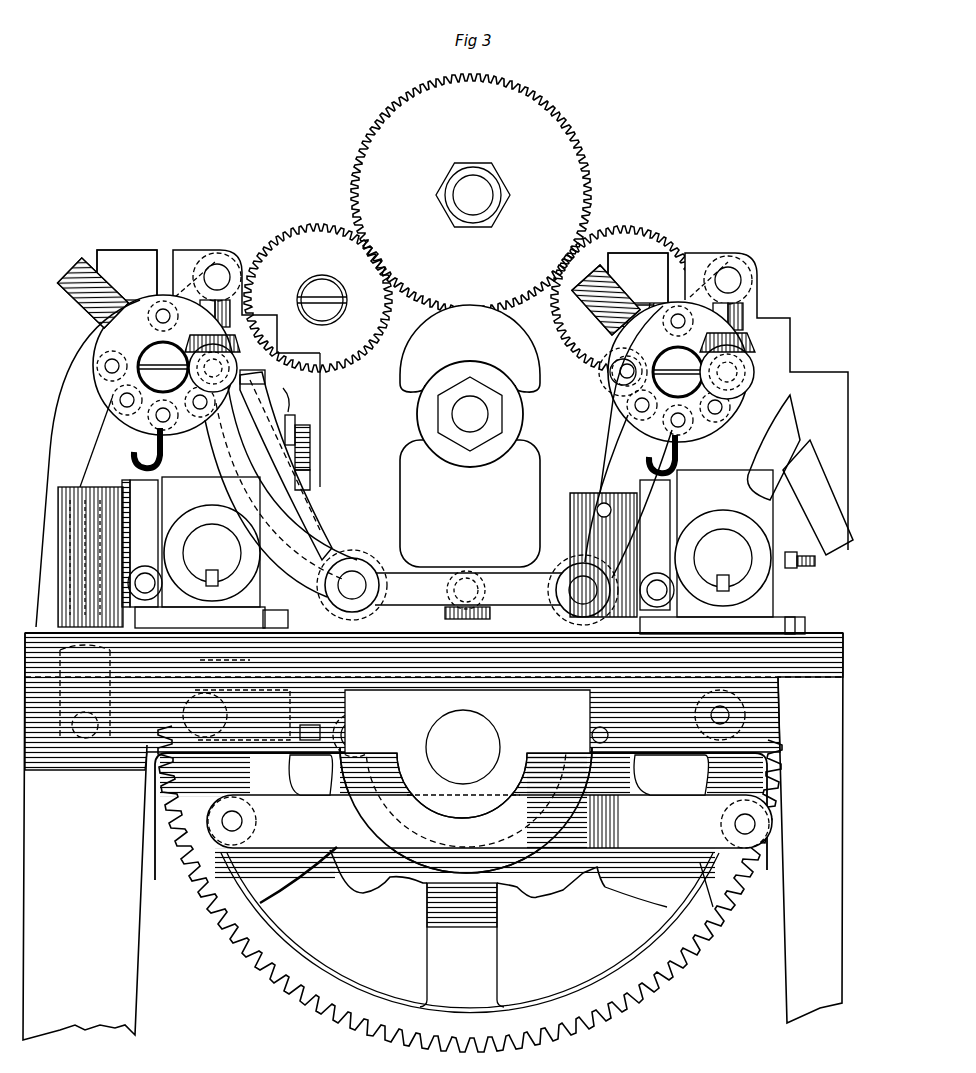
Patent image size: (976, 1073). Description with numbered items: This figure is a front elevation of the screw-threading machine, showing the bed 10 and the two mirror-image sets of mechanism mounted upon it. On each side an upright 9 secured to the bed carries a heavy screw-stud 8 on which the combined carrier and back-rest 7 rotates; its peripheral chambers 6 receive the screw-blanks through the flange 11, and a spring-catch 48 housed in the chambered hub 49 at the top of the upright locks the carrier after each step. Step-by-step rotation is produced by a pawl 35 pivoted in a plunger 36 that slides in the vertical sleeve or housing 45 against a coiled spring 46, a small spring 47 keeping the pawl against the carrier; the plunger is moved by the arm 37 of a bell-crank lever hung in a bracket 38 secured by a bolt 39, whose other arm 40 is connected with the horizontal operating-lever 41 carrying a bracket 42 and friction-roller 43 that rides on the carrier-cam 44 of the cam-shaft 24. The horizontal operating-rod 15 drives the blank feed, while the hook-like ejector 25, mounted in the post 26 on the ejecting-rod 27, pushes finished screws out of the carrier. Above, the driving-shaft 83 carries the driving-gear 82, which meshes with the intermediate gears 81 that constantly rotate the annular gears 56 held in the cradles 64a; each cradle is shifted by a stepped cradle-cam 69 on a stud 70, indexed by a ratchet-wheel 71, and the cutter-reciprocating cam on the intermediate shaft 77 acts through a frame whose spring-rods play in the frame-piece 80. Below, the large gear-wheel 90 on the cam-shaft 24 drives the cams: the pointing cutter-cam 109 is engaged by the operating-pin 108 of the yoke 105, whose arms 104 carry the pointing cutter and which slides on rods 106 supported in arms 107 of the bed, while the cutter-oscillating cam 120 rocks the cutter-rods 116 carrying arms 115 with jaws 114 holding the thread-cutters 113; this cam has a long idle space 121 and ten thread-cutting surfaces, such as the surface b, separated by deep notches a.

The peripheral chambers 6 is at (112, 390).
The combined carrier and back-rest 7 is at (420, 368).
The screw-stud 8 is at (420, 369).
The upright 9 is at (472, 400).
The bed 10 is at (285, 633).
The flange 11 is at (102, 375).
The operating-rod 15 is at (225, 272).
The cam-shaft 24 is at (467, 754).
The hook-like ejector 25 is at (163, 460).
The post 26 is at (400, 545).
The ejecting-rod 27 is at (401, 586).
The pawl 35 is at (358, 449).
The plunger 36 is at (85, 490).
The arm of bell-crank lever 37 is at (105, 752).
The bracket 38 is at (230, 693).
The bolt 39 is at (233, 657).
The other arm of bell-crank lever 40 is at (725, 770).
The operating-lever 41 is at (297, 821).
The bracket 42 is at (489, 810).
The friction-roller 43 is at (342, 729).
The carrier-cam 44 is at (365, 812).
The sleeve or housing 45 is at (85, 808).
The coiled spring 46 is at (465, 620).
The small spring 47 is at (128, 533).
The spring-catch 48 is at (120, 330).
The chambered hub 49 is at (76, 308).
The annular gear 56 is at (250, 318).
The cradle 64a is at (807, 398).
The cradle-cam 69 is at (296, 418).
The stud 70 is at (312, 466).
The ratchet-wheel 71 is at (312, 432).
The intermediate shaft 77 is at (470, 414).
The frame-piece 80 is at (430, 436).
The intermediate gear 81 is at (308, 228).
The driving-gear 82 is at (471, 194).
The driving-shaft 83 is at (482, 187).
The large gear-wheel 90 is at (228, 938).
The arms of yoke 104 is at (441, 502).
The yoke 105 is at (487, 589).
The rods 106 is at (355, 576).
The arms 107 is at (372, 592).
The operating-pin 108 is at (480, 614).
The pointing cutter-cam 109 is at (466, 810).
The thread-cutter 113 is at (798, 382).
The jaw 114 is at (520, 466).
The arm 115 is at (467, 543).
The cutter-rods 116 is at (489, 555).
The cutter-oscillating cam 120 is at (338, 878).
The long space 121 is at (407, 888).
The deep notches a is at (292, 764).
The cam-surface b is at (545, 888).